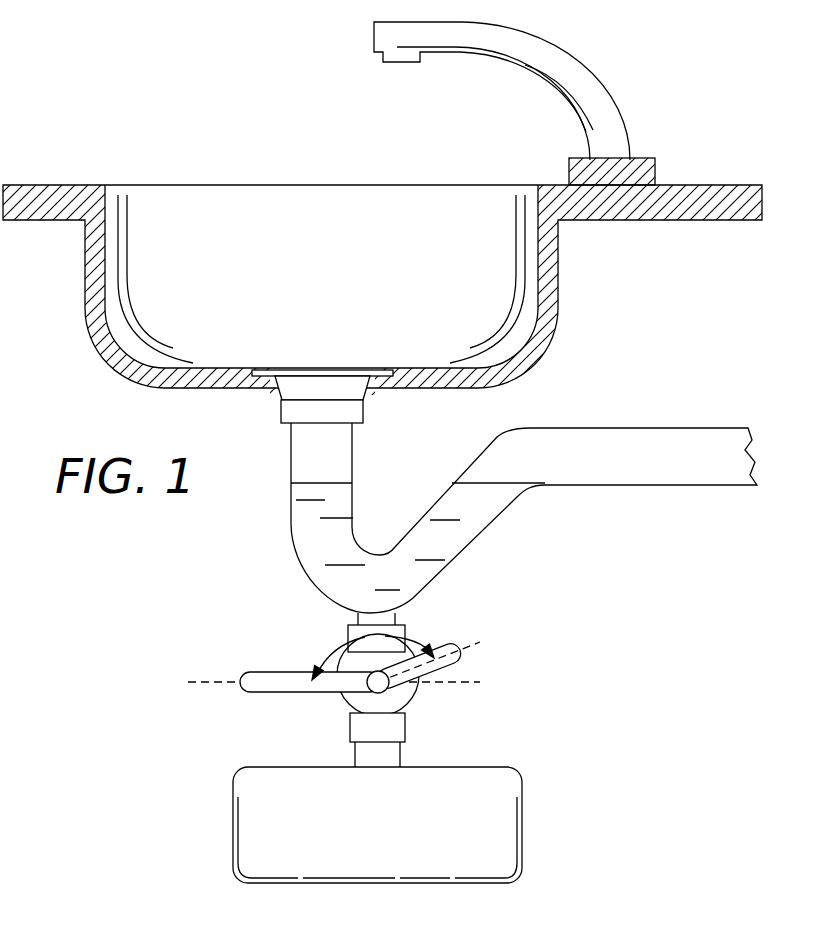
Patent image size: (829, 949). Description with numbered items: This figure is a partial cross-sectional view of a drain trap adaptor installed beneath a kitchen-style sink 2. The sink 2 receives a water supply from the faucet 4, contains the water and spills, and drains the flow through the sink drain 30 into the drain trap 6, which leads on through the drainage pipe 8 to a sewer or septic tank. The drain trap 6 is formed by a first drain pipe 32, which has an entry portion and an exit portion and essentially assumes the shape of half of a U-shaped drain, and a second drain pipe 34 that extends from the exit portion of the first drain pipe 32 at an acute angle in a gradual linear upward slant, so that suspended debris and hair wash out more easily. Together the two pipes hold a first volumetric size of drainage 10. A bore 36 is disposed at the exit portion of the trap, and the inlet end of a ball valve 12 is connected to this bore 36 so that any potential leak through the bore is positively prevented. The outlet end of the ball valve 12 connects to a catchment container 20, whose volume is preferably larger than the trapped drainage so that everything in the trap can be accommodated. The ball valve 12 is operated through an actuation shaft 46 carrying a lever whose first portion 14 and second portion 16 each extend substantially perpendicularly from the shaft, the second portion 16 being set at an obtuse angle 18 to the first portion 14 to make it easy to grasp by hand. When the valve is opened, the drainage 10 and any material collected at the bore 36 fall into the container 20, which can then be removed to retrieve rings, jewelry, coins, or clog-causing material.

The sink 2 is at (83, 282).
The faucet 4 is at (375, 35).
The drain trap 6 is at (445, 443).
The drainage pipe leading to sewer or septic tank 8 is at (637, 426).
The drainage 10 is at (447, 545).
The ball valve 12 is at (345, 696).
The first portion of lever 14 is at (262, 672).
The second portion of lever 16 is at (461, 645).
The angle between first and second portions of lever 18 is at (430, 648).
The catchment container or bottle 20 is at (500, 766).
The sink drain 30 is at (325, 370).
The first drain pipe 32 is at (353, 527).
The second drain pipe 34 is at (441, 497).
The bore 36 is at (352, 618).
The actuation shaft 46 is at (383, 690).